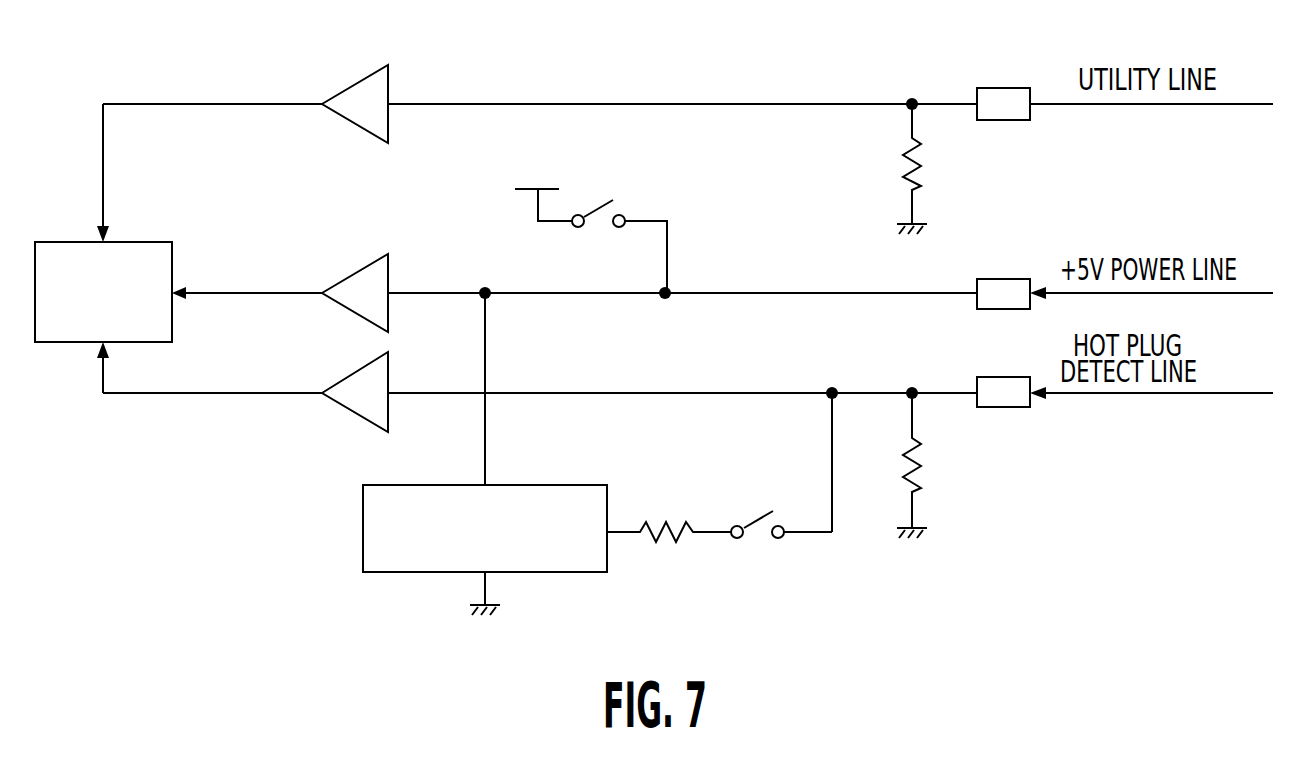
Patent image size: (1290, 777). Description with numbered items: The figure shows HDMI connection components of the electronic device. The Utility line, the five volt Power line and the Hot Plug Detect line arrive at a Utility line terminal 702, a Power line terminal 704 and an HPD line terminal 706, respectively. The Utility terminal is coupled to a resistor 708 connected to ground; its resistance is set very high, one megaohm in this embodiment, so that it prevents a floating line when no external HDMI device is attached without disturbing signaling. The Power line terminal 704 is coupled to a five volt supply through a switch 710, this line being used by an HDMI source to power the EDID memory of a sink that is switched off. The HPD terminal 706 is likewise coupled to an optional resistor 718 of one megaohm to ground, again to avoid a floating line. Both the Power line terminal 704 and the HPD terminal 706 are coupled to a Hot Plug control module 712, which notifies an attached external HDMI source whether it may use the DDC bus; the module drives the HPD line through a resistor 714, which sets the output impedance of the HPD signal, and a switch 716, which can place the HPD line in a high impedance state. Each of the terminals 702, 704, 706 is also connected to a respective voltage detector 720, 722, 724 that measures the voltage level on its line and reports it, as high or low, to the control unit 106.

The control unit 106 is at (52, 240).
The Utility line terminal 702 is at (998, 88).
The +5V Power line terminal 704 is at (1000, 279).
The HPD line terminal 706 is at (1012, 408).
The resistor 708 is at (903, 168).
The switch 710 is at (598, 205).
The Hot Plug control module 712 is at (362, 525).
The resistor 714 is at (668, 540).
The switch 716 is at (757, 522).
The optional resistor 718 is at (921, 460).
The voltage detector 720 is at (351, 84).
The voltage detector 722 is at (336, 304).
The voltage detector 724 is at (351, 411).